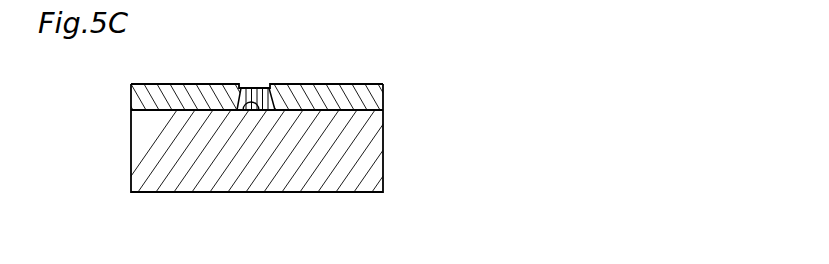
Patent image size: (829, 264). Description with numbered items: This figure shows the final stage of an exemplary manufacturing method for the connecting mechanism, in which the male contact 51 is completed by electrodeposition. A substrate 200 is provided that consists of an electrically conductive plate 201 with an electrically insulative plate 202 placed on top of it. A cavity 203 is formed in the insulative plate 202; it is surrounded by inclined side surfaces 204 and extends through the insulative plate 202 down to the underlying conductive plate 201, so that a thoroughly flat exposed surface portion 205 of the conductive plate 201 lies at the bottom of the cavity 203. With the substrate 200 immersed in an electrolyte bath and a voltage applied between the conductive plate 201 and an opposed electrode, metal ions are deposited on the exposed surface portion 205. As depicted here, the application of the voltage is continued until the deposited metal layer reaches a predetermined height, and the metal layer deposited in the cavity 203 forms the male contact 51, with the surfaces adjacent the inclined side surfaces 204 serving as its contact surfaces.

The substrate 200 is at (283, 129).
The electrically conductive plate 201 is at (371, 161).
The electrically insulative plate 202 is at (337, 85).
The cavity 203 is at (257, 87).
The inclined side surfaces 204 is at (249, 86).
The exposed surface portion 205 is at (242, 108).
The male contact 51 is at (275, 110).